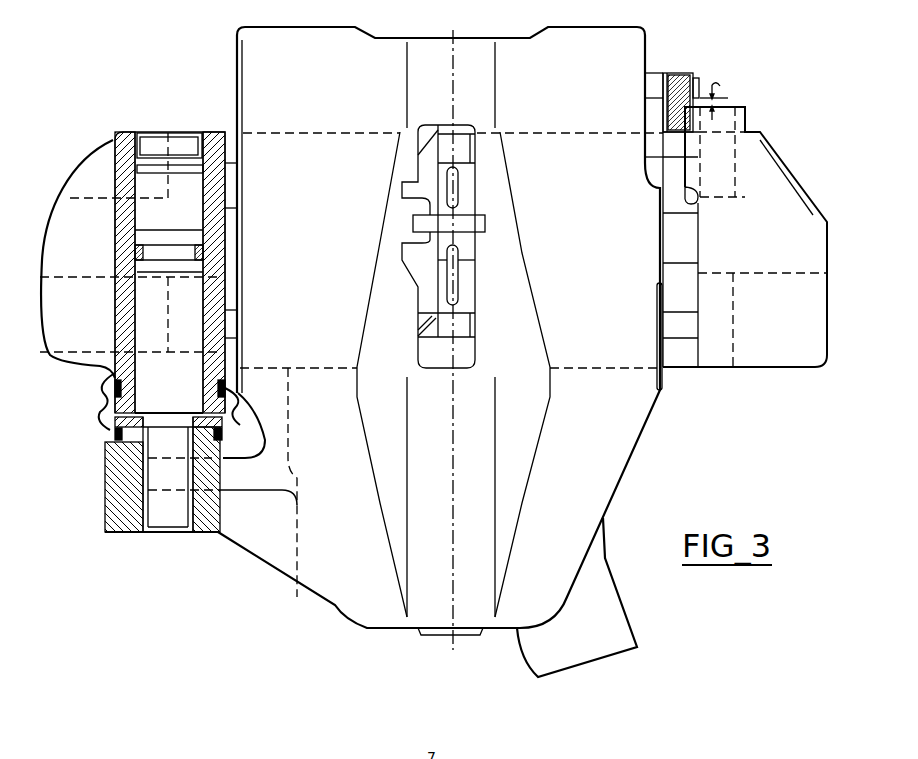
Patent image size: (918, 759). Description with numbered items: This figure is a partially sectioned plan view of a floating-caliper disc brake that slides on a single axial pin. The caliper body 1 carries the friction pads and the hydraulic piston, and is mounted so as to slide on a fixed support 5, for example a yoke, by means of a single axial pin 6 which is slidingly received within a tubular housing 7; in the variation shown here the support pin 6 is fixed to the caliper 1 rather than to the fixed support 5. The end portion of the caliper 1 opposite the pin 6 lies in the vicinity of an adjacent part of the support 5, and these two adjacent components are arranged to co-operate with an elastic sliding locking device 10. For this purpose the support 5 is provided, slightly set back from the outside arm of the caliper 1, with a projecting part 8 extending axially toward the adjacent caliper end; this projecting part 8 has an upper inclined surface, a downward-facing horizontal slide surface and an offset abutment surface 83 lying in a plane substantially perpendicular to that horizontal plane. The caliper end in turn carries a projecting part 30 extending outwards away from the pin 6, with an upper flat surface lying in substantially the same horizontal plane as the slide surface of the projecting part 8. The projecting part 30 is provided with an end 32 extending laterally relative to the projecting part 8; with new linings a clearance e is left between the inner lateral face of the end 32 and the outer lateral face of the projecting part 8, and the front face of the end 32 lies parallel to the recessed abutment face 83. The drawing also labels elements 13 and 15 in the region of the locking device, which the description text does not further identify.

The caliper body 1 is at (255, 100).
The tubular housing 7 is at (125, 297).
The axial pin 6 is at (150, 365).
The inner brake pad backing plate 13 is at (652, 125).
The projecting part 30 is at (665, 62).
The shim elastomer layer 15 is at (680, 80).
The end 32 is at (700, 80).
The elastic sliding locking device 10 is at (730, 62).
The projecting part 8 is at (733, 110).
The offset abutment surface 83 is at (700, 202).
The fixed support 5 is at (768, 345).